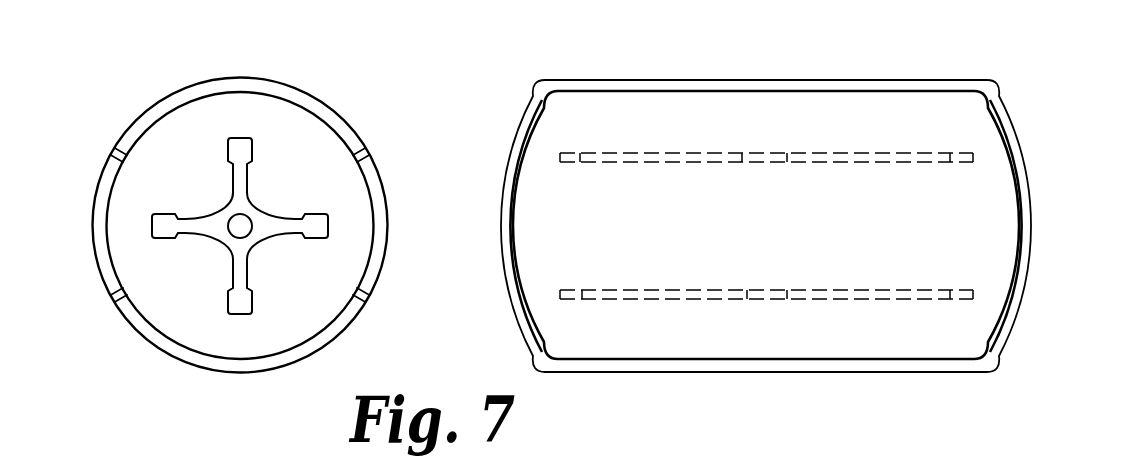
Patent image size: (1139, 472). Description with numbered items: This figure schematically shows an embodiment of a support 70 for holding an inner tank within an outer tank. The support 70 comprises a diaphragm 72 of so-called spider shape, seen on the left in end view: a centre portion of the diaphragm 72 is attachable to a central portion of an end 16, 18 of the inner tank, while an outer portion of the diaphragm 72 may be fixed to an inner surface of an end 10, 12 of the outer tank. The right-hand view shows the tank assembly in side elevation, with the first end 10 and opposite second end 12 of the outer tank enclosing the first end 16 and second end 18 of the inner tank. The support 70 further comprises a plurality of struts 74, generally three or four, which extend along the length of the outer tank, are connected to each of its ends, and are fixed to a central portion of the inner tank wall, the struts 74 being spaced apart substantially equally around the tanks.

The support 70 is at (155, 75).
The diaphragm 72 is at (252, 198).
The first end 10 is at (513, 138).
The second end 12 is at (1017, 132).
The first end 16 is at (512, 220).
The second end 18 is at (1018, 225).
The struts 74 is at (687, 152).